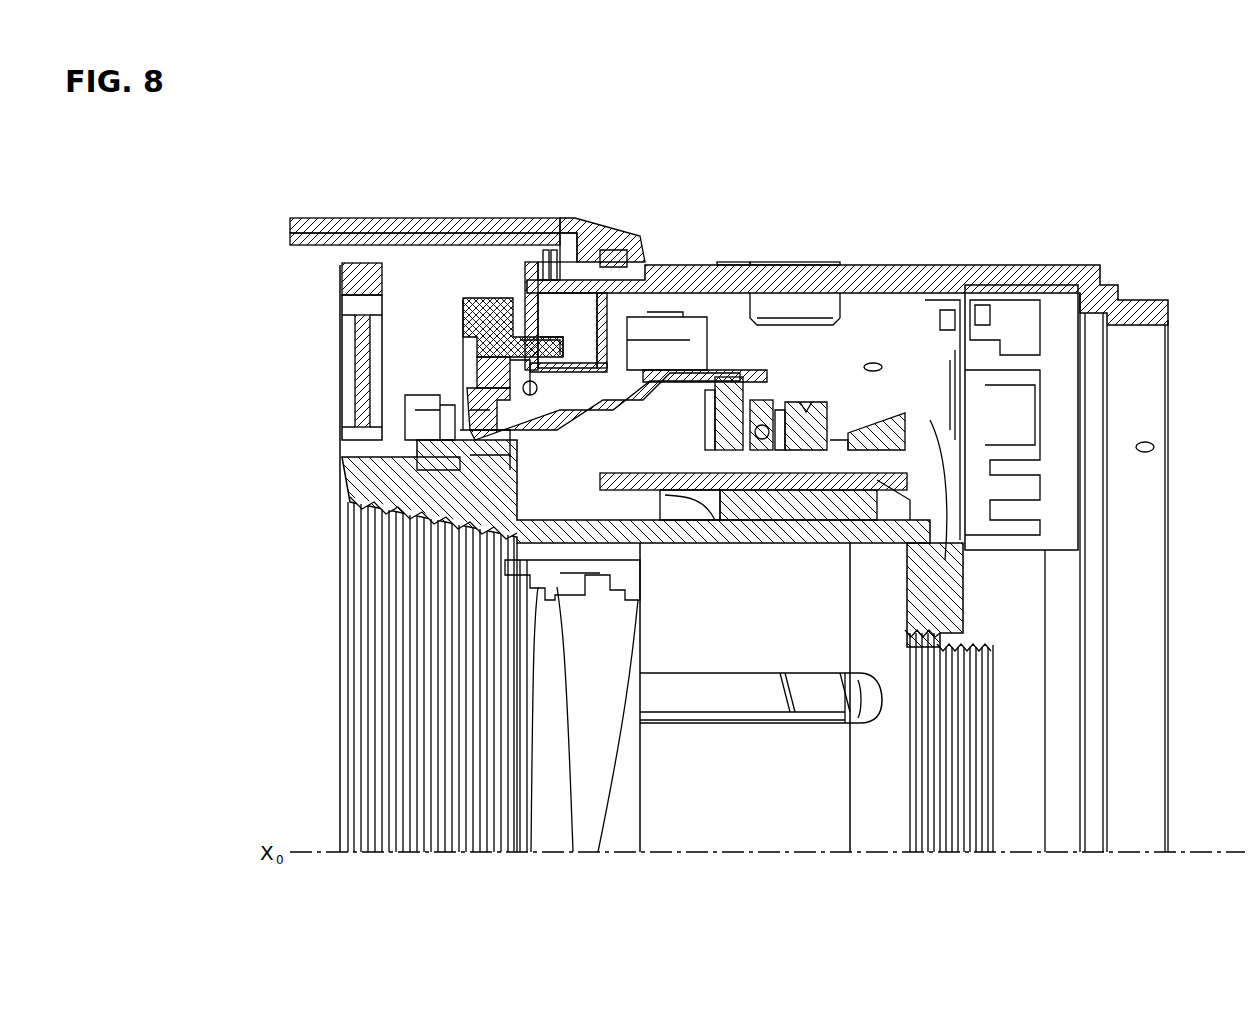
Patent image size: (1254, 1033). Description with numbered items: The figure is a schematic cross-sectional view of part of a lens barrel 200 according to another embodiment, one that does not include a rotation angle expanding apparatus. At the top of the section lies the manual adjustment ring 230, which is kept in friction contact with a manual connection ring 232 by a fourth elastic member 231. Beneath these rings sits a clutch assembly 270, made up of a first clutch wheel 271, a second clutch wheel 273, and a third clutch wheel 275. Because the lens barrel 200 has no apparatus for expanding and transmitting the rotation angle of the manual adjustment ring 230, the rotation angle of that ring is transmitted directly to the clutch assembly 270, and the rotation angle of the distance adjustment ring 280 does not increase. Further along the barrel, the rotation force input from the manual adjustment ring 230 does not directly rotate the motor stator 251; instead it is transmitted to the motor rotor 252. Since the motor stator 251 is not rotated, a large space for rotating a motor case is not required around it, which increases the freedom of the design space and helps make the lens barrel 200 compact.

The lens barrel 200 is at (1130, 206).
The manual adjustment ring 230 is at (500, 236).
The fourth elastic member 231 is at (568, 262).
The manual connection ring 232 is at (548, 262).
The motor stator 251 is at (888, 433).
The motor rotor 252 is at (818, 402).
The clutch assembly 270 is at (455, 146).
The first clutch wheel 271 is at (527, 368).
The second clutch wheel 273 is at (470, 372).
The third clutch wheel 275 is at (467, 392).
The distance adjustment ring 280 is at (417, 460).